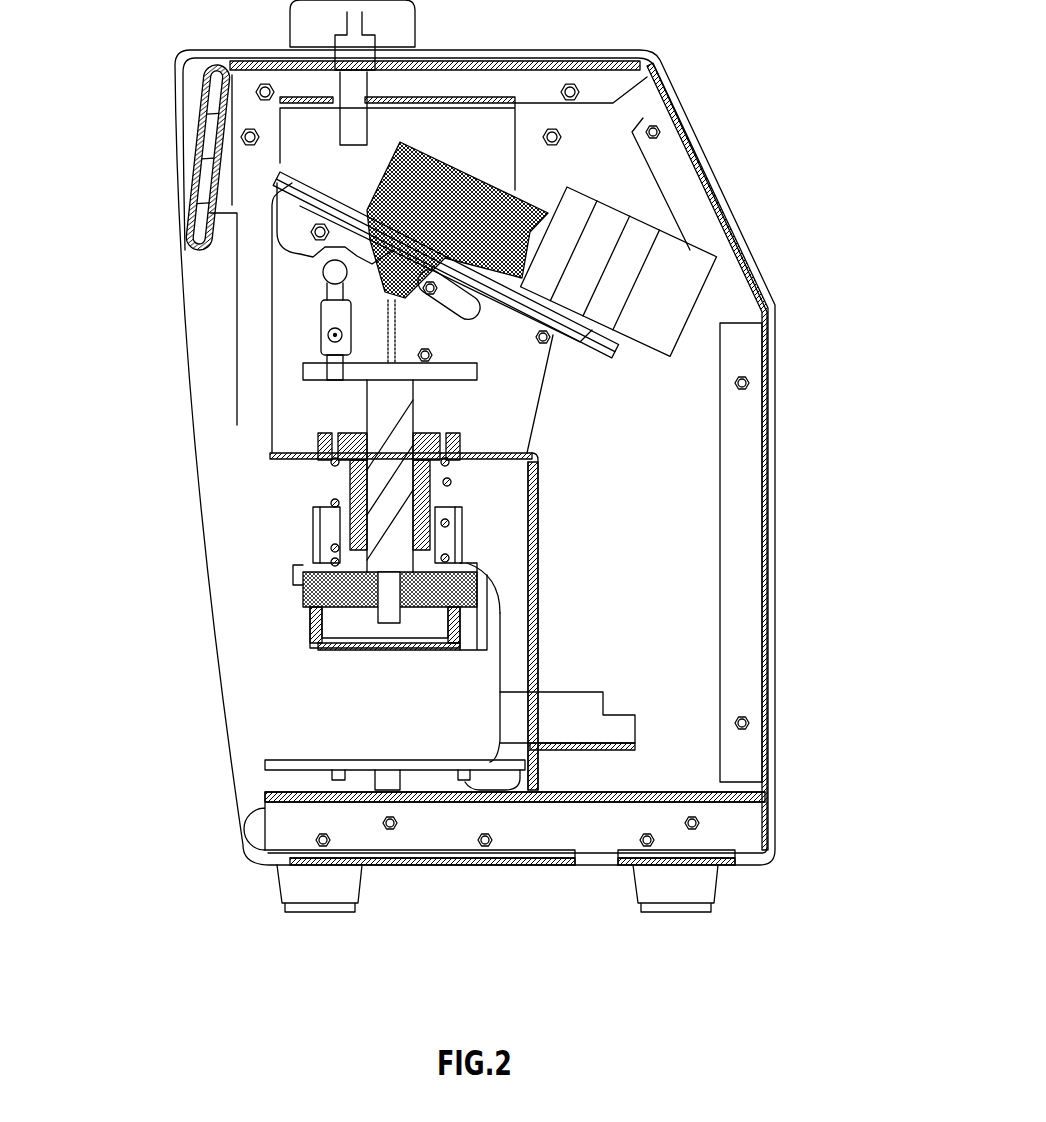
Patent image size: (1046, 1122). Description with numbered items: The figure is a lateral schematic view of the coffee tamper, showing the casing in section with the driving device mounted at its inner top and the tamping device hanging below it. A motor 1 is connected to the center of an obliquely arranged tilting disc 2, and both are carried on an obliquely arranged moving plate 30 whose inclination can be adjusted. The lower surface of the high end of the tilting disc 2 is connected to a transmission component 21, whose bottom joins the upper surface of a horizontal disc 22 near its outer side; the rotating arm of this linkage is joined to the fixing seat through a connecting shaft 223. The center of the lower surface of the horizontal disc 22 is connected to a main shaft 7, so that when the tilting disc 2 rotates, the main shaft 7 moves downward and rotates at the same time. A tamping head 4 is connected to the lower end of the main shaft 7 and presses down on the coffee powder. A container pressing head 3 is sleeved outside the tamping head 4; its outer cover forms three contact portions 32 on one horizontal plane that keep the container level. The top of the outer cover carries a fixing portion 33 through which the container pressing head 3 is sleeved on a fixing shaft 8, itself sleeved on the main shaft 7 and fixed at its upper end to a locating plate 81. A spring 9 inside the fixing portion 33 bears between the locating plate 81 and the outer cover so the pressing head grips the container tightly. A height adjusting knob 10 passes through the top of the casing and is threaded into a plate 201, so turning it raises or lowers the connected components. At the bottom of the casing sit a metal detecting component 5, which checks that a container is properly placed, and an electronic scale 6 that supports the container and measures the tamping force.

The motor 1 is at (610, 215).
The tilting disc 2 is at (310, 257).
The container pressing head 3 is at (283, 572).
The tamping head 4 is at (317, 633).
The metal detecting component 5 is at (597, 715).
The electronic scale 6 is at (267, 767).
The main shaft 7 is at (390, 412).
The fixing shaft 8 is at (350, 497).
The spring 9 is at (455, 482).
The height adjusting knob 10 is at (407, 30).
The transmission component 21 is at (317, 337).
The horizontal disc 22 is at (463, 375).
The moving plate 30 is at (228, 187).
The contact portions 32 is at (487, 643).
The fixing portion 33 is at (460, 537).
The locating plate 81 is at (362, 452).
The plate 201 is at (225, 113).
The connecting shaft 223 is at (317, 333).